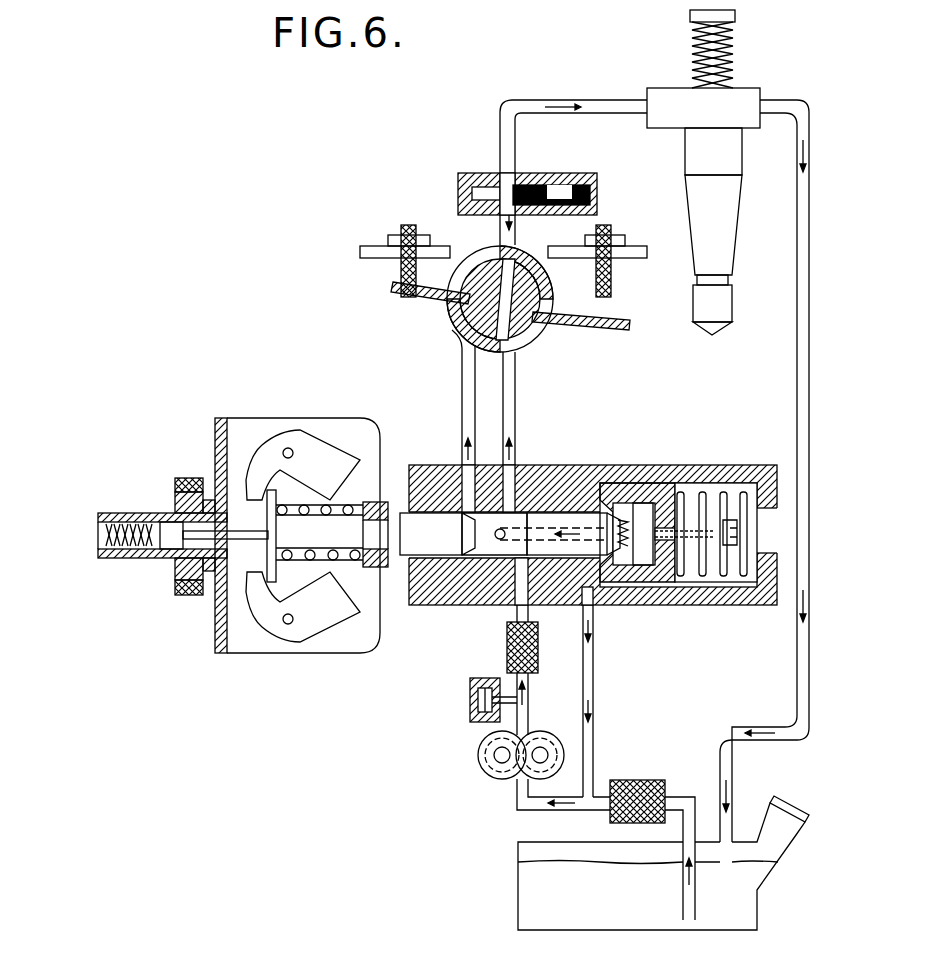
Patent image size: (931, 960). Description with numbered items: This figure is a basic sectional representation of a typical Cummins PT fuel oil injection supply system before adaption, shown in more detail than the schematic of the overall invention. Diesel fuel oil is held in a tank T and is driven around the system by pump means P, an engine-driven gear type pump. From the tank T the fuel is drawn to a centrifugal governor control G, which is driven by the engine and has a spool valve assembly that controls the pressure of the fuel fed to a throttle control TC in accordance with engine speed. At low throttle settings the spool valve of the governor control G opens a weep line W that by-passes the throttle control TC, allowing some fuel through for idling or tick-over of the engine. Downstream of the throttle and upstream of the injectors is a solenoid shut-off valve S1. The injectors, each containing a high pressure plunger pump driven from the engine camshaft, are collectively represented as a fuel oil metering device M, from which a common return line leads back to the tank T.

The fuel oil metering device M is at (675, 105).
The solenoid shut-off valve S1 is at (487, 190).
The weep line W is at (510, 272).
The throttle control TC is at (530, 327).
The centrifugal governor control G is at (245, 452).
The pump means P is at (490, 757).
The tank T is at (533, 887).